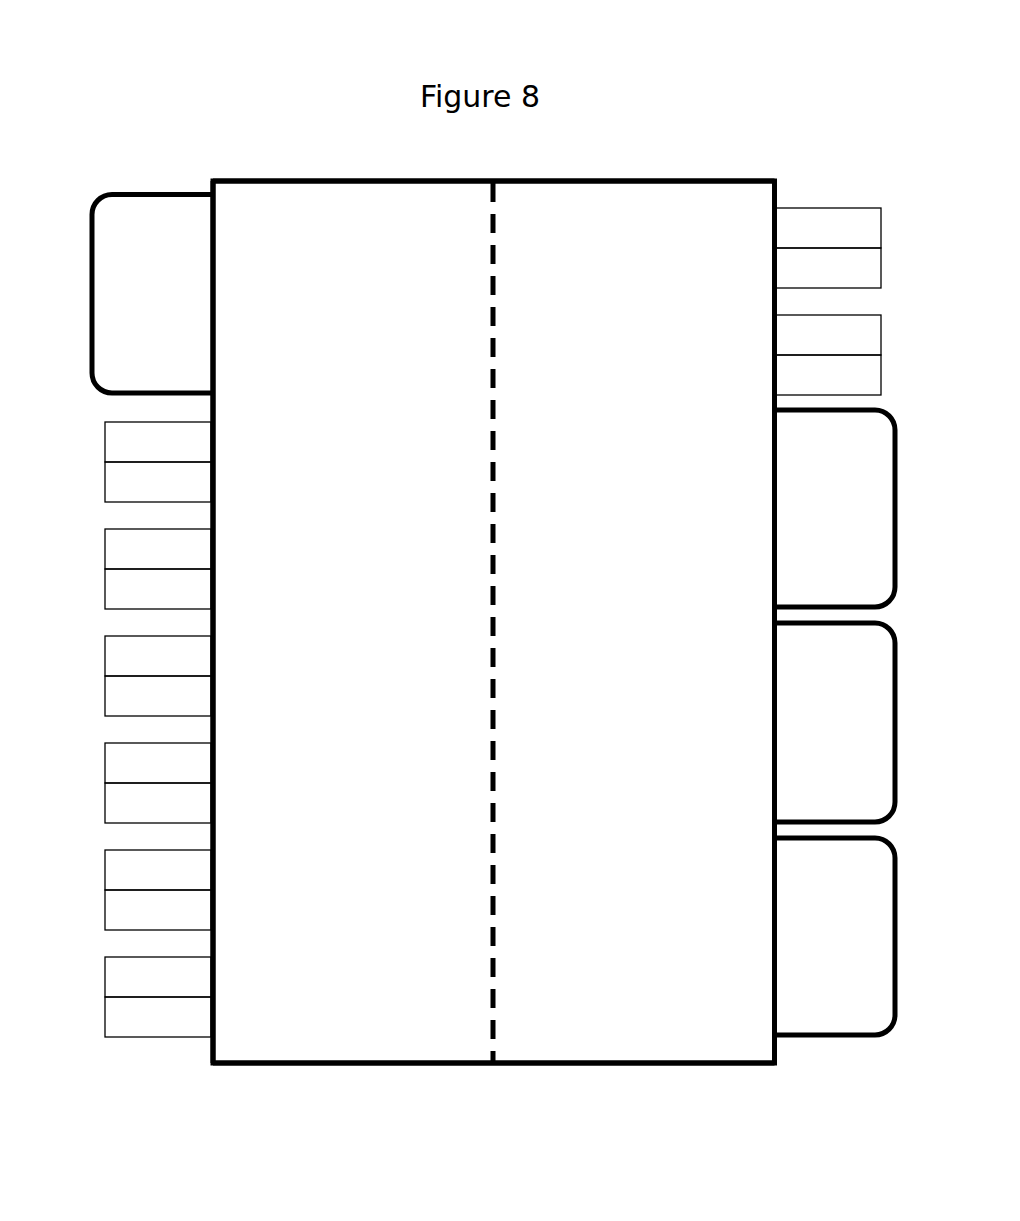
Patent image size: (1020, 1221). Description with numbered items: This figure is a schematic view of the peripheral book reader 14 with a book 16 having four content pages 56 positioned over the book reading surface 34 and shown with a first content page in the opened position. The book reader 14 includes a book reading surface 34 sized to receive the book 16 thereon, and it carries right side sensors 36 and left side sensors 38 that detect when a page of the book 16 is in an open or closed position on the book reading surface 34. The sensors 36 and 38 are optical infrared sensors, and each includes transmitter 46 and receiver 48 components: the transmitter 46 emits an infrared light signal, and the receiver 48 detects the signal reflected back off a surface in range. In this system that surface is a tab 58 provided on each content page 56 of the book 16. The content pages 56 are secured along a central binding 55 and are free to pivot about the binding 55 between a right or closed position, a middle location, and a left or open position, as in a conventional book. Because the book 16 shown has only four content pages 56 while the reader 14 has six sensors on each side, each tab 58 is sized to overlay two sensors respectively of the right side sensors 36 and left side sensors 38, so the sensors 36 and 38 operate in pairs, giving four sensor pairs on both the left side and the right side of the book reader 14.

The peripheral book reader 14 is at (432, 1066).
The book 16 is at (398, 248).
The book reading surface 34 is at (612, 178).
The right side sensors 36 is at (846, 156).
The left side sensors 38 is at (127, 582).
The transmitter 46 is at (105, 555).
The receiver 48 is at (105, 490).
The central binding 55 is at (495, 502).
The content page 56 is at (327, 1010).
The tab 58 is at (90, 274).